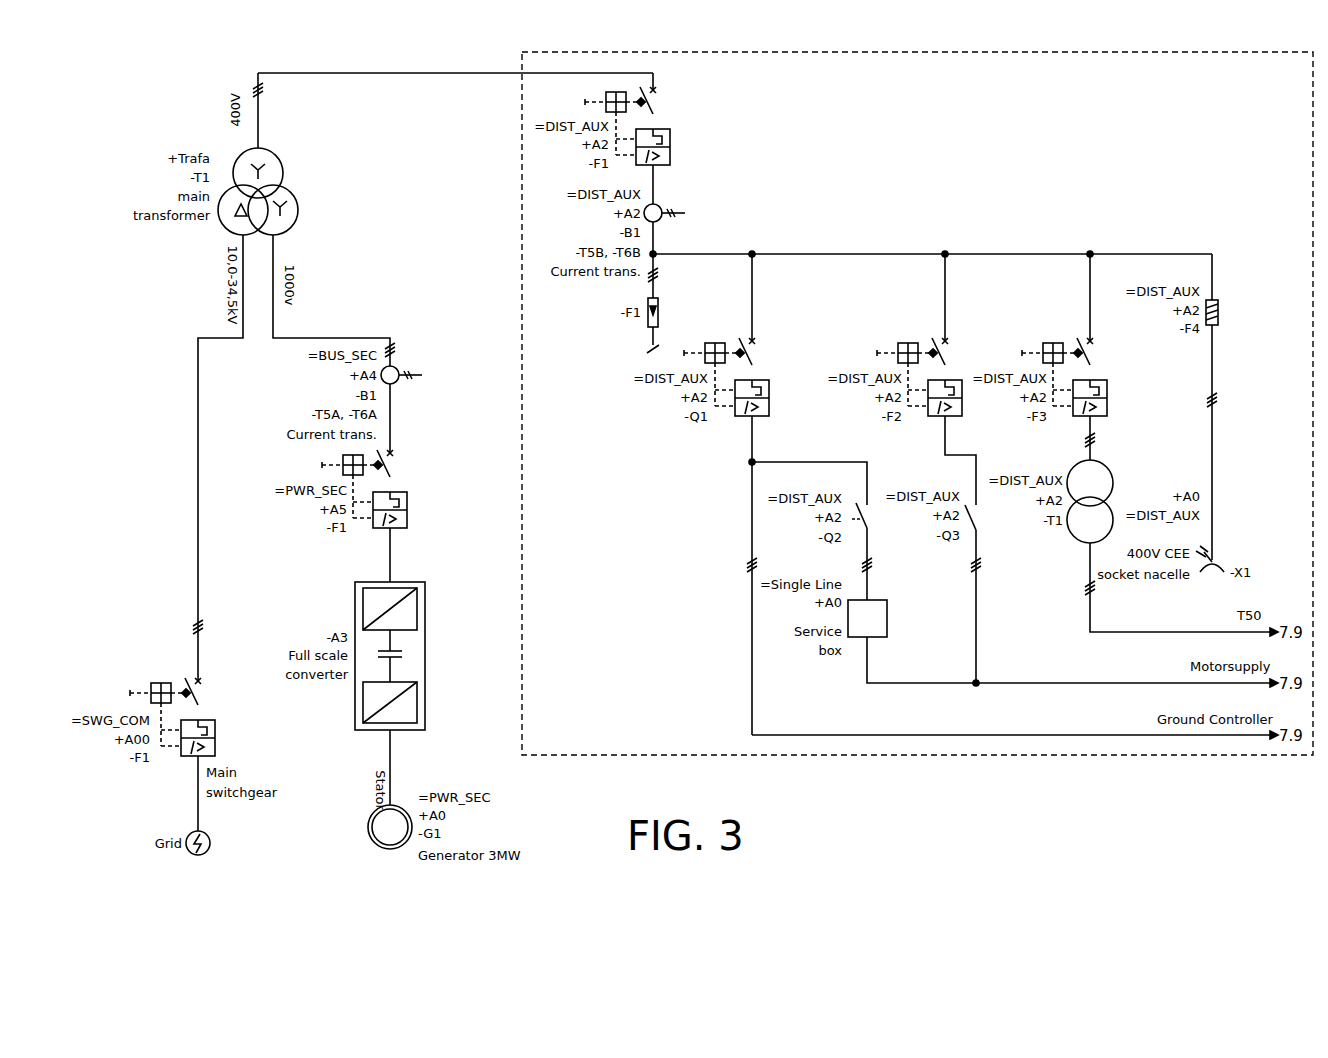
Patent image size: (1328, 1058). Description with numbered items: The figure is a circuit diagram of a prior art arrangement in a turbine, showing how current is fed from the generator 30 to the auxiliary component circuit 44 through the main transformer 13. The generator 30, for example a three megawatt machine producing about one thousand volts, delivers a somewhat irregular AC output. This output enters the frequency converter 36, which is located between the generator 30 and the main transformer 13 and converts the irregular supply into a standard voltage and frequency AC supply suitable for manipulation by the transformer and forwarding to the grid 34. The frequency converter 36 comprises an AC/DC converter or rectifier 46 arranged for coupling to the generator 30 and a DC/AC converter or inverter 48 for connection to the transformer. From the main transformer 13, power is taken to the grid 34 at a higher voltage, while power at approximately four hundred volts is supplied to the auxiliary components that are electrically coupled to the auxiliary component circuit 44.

The main transformer 13 is at (213, 136).
The generator 30 is at (368, 827).
The grid 34 is at (210, 843).
The frequency converter 36 is at (391, 656).
The auxiliary component circuit 44 is at (603, 748).
The AC/DC converter or rectifier 46 is at (362, 705).
The DC/AC converter or inverter 48 is at (418, 612).